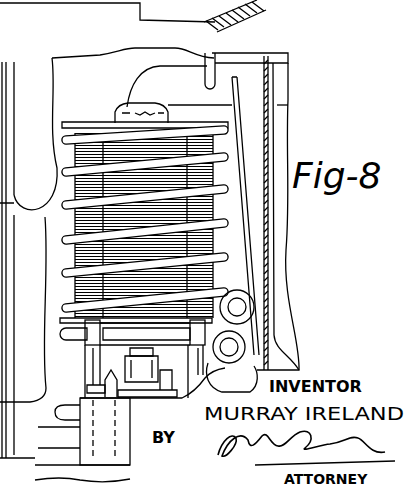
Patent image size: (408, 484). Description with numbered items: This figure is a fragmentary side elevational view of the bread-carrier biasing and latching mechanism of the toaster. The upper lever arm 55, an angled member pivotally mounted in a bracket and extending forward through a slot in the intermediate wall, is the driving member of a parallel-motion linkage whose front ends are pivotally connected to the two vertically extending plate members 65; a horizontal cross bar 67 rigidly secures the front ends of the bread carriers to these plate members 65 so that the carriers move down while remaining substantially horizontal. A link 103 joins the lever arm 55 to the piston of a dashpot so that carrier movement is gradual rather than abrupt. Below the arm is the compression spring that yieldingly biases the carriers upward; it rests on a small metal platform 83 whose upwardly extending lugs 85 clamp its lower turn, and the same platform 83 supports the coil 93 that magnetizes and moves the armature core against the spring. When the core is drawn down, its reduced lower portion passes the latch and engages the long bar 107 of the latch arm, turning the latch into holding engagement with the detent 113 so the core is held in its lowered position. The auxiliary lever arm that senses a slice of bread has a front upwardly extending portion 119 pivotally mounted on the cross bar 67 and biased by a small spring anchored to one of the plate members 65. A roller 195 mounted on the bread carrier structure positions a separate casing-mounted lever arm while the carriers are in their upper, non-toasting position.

The upper lever arm 55 is at (131, 90).
The link 103 is at (231, 53).
The coil 93 is at (63, 185).
The plate members 65 is at (257, 256).
The horizontal cross bar 67 is at (260, 318).
The front upwardly extending portion 119 is at (282, 323).
The platform 83 is at (68, 336).
The lugs 85 is at (86, 336).
The detent 113 is at (88, 386).
The bar 107 is at (80, 391).
The roller 195 is at (232, 361).